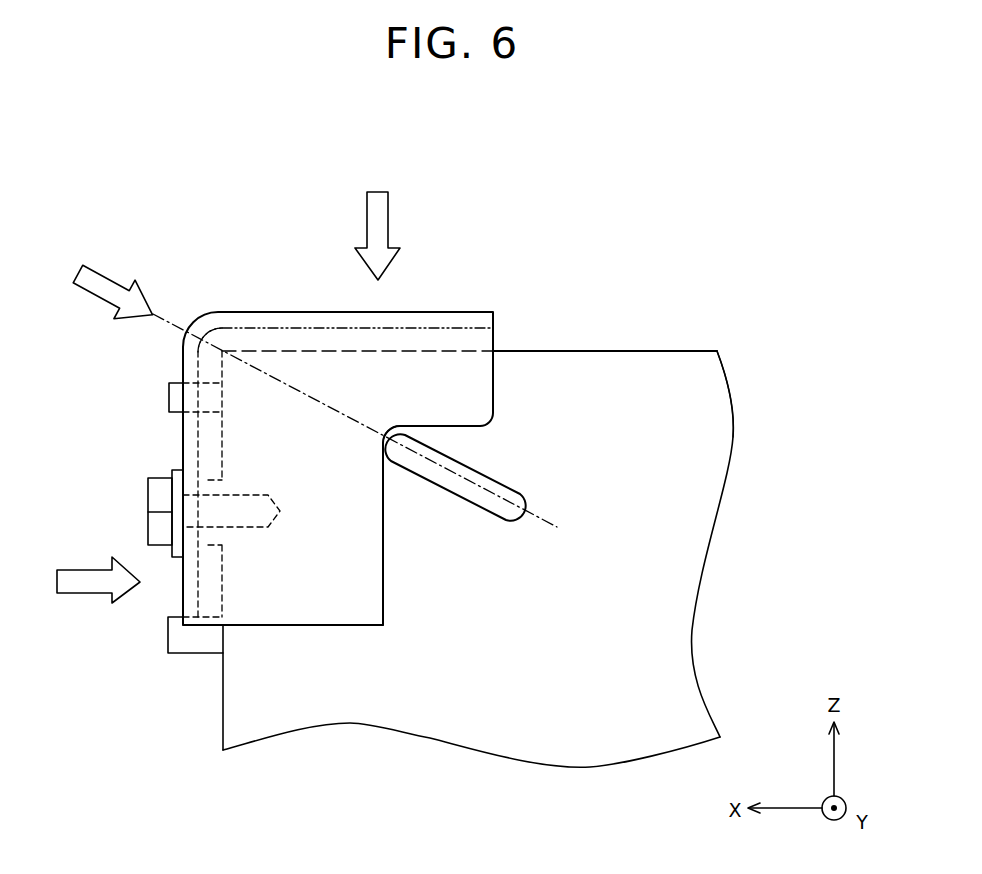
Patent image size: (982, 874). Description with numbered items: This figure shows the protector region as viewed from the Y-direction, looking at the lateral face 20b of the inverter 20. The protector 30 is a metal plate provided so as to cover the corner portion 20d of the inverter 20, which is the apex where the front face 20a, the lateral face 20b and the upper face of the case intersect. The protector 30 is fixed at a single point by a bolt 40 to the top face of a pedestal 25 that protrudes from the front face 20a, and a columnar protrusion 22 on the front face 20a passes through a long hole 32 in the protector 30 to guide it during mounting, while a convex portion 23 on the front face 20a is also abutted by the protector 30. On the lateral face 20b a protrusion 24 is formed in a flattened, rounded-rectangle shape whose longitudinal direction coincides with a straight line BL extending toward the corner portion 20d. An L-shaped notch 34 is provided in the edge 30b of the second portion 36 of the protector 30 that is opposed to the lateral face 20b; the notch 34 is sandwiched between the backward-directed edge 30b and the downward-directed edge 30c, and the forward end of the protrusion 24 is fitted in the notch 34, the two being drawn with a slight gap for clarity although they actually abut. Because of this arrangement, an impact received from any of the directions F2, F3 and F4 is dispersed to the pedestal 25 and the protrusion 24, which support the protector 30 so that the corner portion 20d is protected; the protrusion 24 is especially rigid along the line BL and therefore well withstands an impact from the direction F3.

The inverter 20 is at (505, 523).
The front face 20a is at (166, 701).
The lateral face 20b is at (705, 400).
The corner portion 20d is at (225, 295).
The columnar protrusion 22 is at (175, 400).
The convex portion 23 is at (173, 632).
The protrusion 24 is at (506, 488).
The pedestal 25 is at (155, 484).
The protector 30 is at (458, 318).
The edge 30b is at (401, 634).
The edge 30c is at (474, 365).
The long hole 32 is at (178, 373).
The notch 34 is at (427, 612).
The second portion 36 is at (285, 598).
The bolt 40 is at (153, 497).
The straight line BL is at (565, 500).
The impact direction F2 is at (81, 580).
The impact direction F3 is at (103, 294).
The impact direction F4 is at (377, 223).